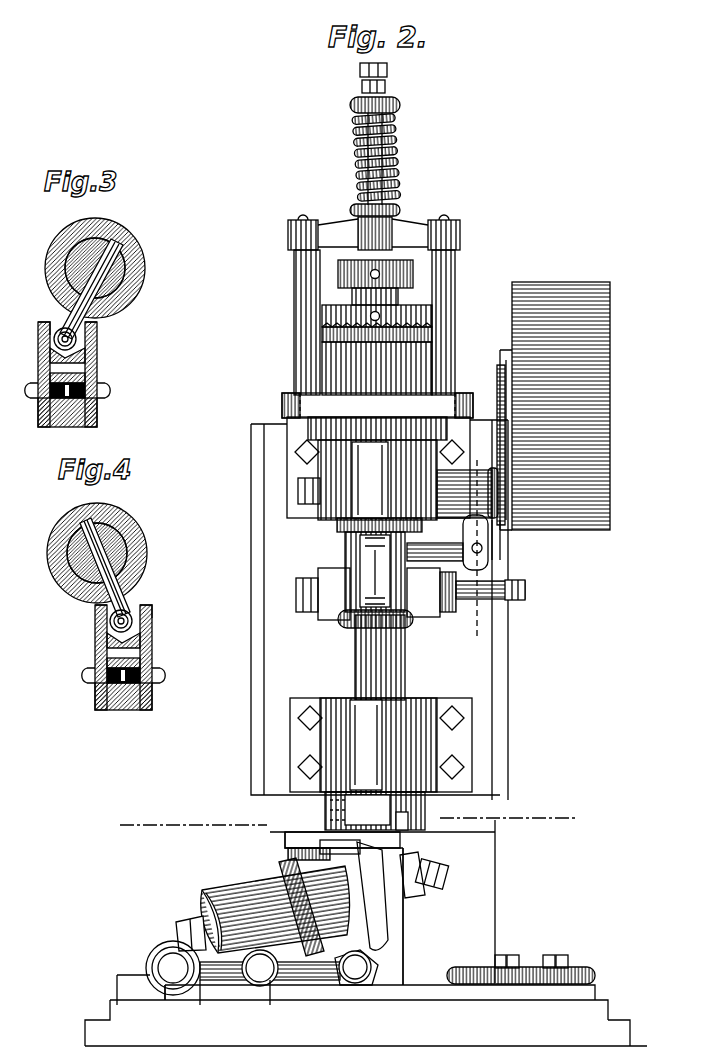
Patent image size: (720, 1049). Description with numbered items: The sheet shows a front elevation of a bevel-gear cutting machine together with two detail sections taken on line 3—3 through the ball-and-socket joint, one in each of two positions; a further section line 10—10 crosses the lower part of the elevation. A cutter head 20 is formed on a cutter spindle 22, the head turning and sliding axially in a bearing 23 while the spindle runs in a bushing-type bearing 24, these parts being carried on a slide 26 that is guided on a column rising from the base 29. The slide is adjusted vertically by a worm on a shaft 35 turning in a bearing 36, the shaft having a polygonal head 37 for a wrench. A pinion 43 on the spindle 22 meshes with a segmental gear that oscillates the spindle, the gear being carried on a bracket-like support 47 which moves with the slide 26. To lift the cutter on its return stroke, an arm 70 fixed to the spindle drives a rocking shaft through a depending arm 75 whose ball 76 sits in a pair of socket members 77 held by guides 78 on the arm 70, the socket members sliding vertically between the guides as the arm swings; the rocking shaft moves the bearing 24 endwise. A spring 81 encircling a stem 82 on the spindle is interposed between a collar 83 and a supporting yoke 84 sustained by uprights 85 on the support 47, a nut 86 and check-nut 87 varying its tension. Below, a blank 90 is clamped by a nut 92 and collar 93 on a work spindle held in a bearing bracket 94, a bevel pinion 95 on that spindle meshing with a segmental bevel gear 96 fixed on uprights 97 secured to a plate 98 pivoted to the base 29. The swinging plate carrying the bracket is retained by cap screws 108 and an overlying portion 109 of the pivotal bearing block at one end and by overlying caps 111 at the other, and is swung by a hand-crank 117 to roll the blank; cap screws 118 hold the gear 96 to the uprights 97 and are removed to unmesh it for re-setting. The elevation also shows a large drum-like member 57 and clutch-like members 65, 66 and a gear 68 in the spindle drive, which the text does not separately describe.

In FIG. 2, the section line 3— 3 is at (480, 547).
In FIG. 2, the section line 10— 10 is at (361, 822).
In FIG. 2, the cutter head 20 is at (325, 812).
In FIG. 2, the cutter spindle 22 is at (395, 663).
In FIG. 2, the bearing 23 is at (342, 705).
In FIG. 2, the bearing 24 is at (338, 528).
In FIG. 2, the slide 26 is at (332, 505).
In FIG. 2, the base 29 is at (618, 1022).
In FIG. 2, the shaft 35 is at (440, 614).
In FIG. 2, the bearing 36 is at (341, 614).
In FIG. 2, the polygonal head 37 is at (525, 590).
In FIG. 2, the pinion 43 is at (318, 368).
In FIG. 2, the support 47 is at (290, 403).
In FIG. 2, the gear 57 is at (552, 290).
In FIG. 2, the clutch member 65 is at (425, 333).
In FIG. 2, the clutch member 66 is at (425, 312).
In FIG. 2, the gear 68 is at (338, 275).
In FIG. 2, the arm 70 is at (425, 545).
In FIG. 3, the arm 70 is at (50, 414).
In FIG. 4, the arm 70 is at (107, 697).
In FIG. 2, the depending arm 75 is at (496, 510).
In FIG. 3, the depending arm 75 is at (70, 322).
In FIG. 4, the depending arm 75 is at (128, 600).
In FIG. 3, the ball 76 is at (75, 346).
In FIG. 4, the ball 76 is at (132, 630).
In FIG. 3, the socket members 77 is at (50, 362).
In FIG. 4, the socket members 77 is at (107, 644).
In FIG. 2, the guides 78 is at (482, 535).
In FIG. 3, the guides 78 is at (40, 325).
In FIG. 4, the guides 78 is at (97, 612).
In FIG. 2, the spring 81 is at (398, 157).
In FIG. 2, the stem 82 is at (356, 158).
In FIG. 2, the collar 83 is at (400, 106).
In FIG. 2, the supporting yoke 84 is at (410, 230).
In FIG. 2, the uprights 85 is at (300, 312).
In FIG. 2, the nut 86 is at (385, 87).
In FIG. 2, the check-nut 87 is at (387, 70).
In FIG. 2, the blank 90 is at (410, 918).
In FIG. 2, the nut 92 is at (445, 870).
In FIG. 2, the collar 93 is at (420, 897).
In FIG. 2, the bearing bracket 94 is at (232, 886).
In FIG. 2, the bevel pinion 95 is at (283, 867).
In FIG. 2, the segmental bevel gear 96 is at (270, 830).
In FIG. 2, the uprights 97 is at (395, 950).
In FIG. 2, the plate 98 is at (598, 1010).
In FIG. 2, the cap screws 108 is at (510, 955).
In FIG. 2, the overlying portion 109 is at (588, 967).
In FIG. 2, the overlying caps 111 is at (130, 983).
In FIG. 2, the hand-crank 117 is at (355, 988).
In FIG. 2, the cap screws 118 is at (408, 817).